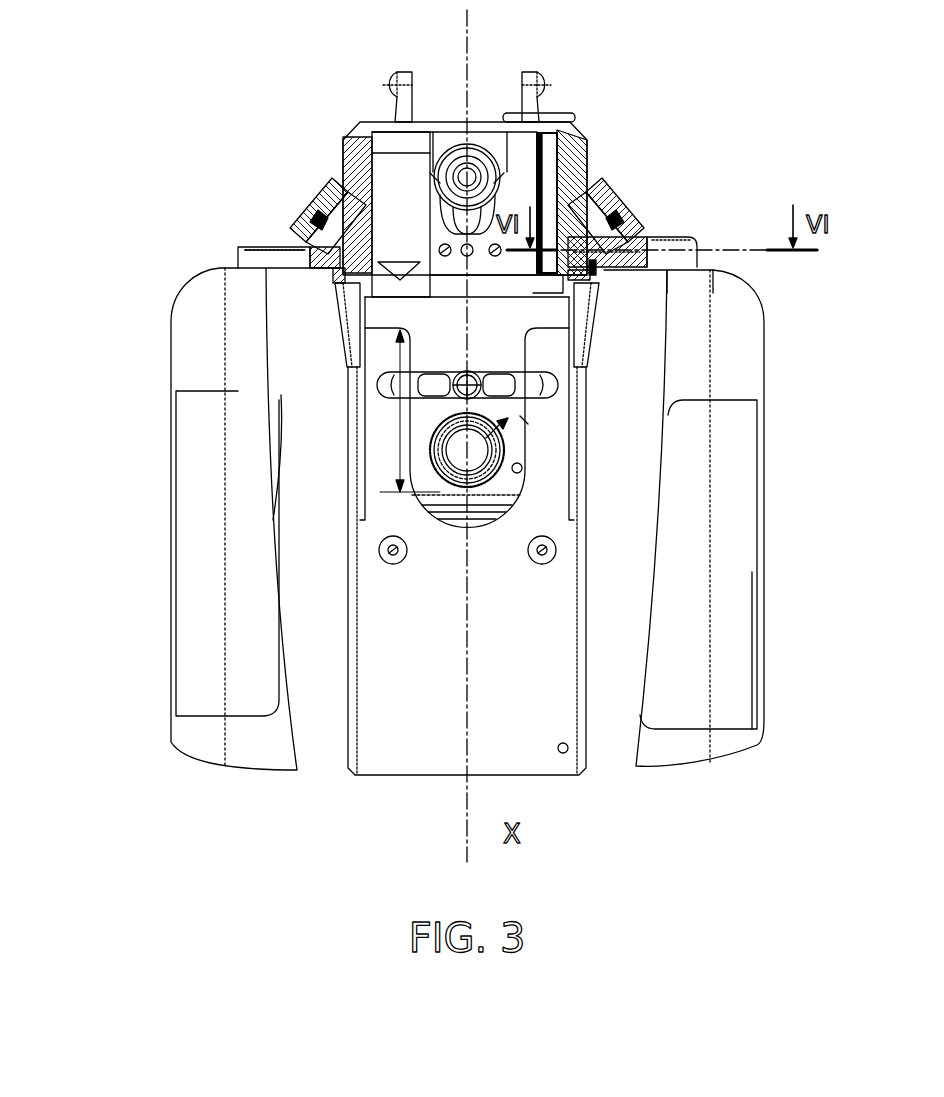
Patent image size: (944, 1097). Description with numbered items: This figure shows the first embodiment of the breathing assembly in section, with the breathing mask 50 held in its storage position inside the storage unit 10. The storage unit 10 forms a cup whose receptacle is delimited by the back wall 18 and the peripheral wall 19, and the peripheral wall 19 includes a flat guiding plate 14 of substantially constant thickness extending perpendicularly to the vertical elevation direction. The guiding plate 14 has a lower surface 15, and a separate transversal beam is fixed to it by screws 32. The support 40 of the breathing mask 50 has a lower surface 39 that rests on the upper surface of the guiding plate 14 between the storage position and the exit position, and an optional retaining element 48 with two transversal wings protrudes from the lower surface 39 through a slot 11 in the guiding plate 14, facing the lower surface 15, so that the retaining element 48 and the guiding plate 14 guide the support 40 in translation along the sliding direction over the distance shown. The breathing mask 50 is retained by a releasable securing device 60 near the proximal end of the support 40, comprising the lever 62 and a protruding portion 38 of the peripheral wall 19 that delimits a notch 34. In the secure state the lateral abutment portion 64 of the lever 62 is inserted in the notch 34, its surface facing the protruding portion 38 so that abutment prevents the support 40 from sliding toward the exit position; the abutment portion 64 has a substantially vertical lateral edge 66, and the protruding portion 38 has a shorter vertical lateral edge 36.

The storage unit 10 is at (140, 741).
The slot 11 is at (526, 504).
The guiding plate 14 is at (543, 477).
The lower surface 15 is at (548, 357).
The back wall 18 is at (297, 772).
The peripheral wall 19 is at (193, 372).
The screws 32 is at (533, 605).
The notch 34 is at (597, 277).
The lateral edge 36 is at (597, 210).
The protruding portion 38 is at (607, 223).
The lower surface 39 is at (515, 442).
The support 40 is at (447, 298).
The retaining element 48 is at (533, 382).
The breathing mask 50 is at (344, 89).
The releasable securing device 60 is at (623, 233).
The lever 62 is at (567, 187).
The lateral abutment portion 64 is at (597, 270).
The lateral edge 66 is at (590, 256).